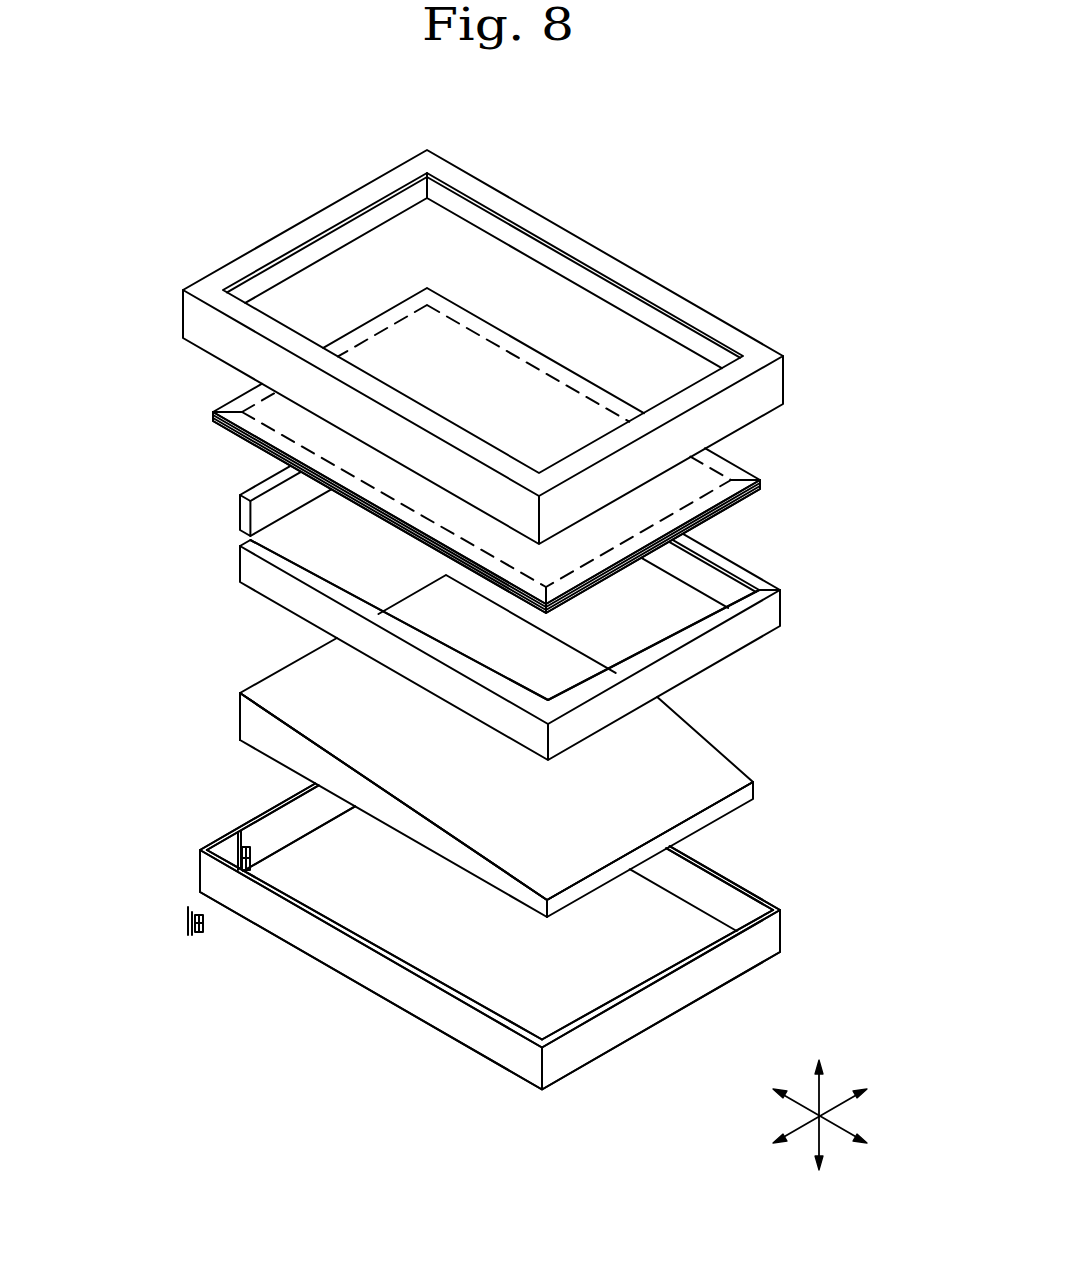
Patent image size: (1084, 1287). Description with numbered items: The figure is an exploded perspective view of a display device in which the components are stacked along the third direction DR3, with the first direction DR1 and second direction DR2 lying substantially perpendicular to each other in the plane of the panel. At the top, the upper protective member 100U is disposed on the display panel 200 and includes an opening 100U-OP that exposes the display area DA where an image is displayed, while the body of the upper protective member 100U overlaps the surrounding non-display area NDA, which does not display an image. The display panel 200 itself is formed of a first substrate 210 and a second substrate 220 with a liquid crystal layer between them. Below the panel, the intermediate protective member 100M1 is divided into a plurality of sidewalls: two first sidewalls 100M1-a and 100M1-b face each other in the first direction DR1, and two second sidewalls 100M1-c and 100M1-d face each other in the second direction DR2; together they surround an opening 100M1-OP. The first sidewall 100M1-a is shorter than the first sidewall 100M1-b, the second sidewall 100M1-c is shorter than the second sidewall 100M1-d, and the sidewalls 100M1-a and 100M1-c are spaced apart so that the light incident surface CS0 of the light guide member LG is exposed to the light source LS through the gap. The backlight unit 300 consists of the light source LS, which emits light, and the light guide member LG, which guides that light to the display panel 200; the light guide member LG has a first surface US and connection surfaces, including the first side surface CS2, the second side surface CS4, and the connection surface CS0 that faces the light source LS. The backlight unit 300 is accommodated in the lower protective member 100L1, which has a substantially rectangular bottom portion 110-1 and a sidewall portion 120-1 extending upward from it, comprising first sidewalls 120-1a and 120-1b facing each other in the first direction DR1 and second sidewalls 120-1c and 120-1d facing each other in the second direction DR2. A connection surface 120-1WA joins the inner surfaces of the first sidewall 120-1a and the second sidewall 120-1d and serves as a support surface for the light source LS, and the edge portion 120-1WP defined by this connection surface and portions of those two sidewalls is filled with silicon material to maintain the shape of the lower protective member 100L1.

The upper protective member 100U is at (775, 380).
The opening 100U-OP is at (560, 303).
The display panel 200 is at (867, 442).
The first substrate 210 is at (745, 489).
The second substrate 220 is at (743, 478).
The display area DA is at (270, 411).
The non-display area NDA is at (242, 417).
The intermediate protective member 100M1 is at (773, 610).
The first sidewall 100M1-a is at (262, 514).
The first sidewall 100M1-b is at (687, 657).
The second sidewall 100M1-c is at (727, 591).
The second sidewall 100M1-d is at (267, 576).
The opening of intermediate protective member 100M1-OP is at (695, 601).
The backlight unit 300 is at (129, 712).
The light guide member LG is at (237, 681).
The light source LS is at (249, 840).
The first surface US is at (727, 786).
The connection surface CS0 is at (238, 717).
The first side surface CS2 is at (707, 817).
The second side surface CS4 is at (441, 849).
The lower protective member 100L1 is at (413, 1117).
The bottom portion 110-1 is at (550, 1003).
The sidewall portion 120-1 is at (433, 1003).
The first sidewall 120-1a is at (280, 833).
The first sidewall 120-1b is at (723, 967).
The second sidewall 120-1c is at (743, 910).
The second sidewall 120-1d is at (377, 972).
The edge portion 120-1WP is at (228, 853).
The connection surface 120-1WA is at (233, 882).
The first direction DR1 is at (843, 1126).
The second direction DR2 is at (843, 1105).
The third direction DR3 is at (825, 1103).